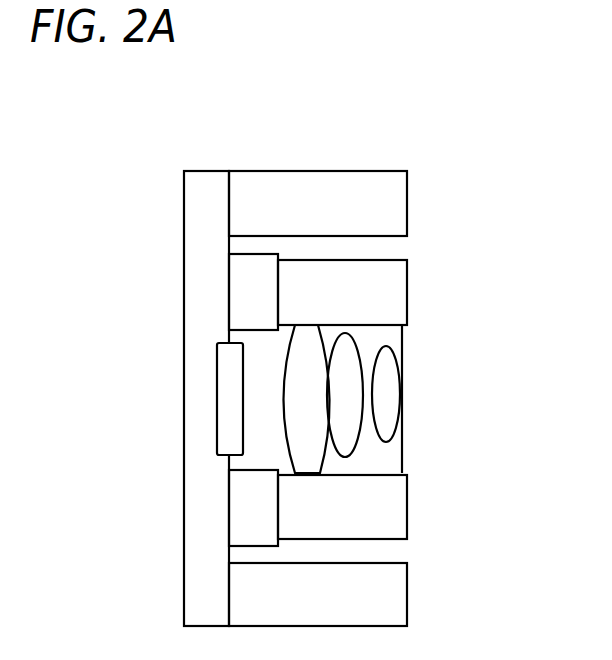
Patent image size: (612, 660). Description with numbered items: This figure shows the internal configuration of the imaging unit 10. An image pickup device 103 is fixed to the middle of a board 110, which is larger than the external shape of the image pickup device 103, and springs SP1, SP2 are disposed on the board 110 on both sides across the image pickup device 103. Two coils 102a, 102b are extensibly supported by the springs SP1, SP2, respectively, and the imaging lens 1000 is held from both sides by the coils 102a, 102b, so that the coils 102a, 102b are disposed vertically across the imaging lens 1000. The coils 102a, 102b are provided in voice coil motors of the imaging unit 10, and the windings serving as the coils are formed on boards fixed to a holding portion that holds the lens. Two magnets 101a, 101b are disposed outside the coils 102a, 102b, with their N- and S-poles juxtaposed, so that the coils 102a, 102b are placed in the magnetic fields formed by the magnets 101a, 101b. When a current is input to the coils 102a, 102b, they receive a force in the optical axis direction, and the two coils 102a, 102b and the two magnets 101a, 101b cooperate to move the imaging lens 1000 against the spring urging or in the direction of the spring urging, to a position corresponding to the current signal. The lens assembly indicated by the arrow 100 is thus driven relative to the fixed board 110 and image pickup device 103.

The imaging unit 10 is at (458, 124).
The board 110 is at (202, 227).
The magnet 101a is at (380, 207).
The lens unit 100 is at (477, 268).
The coil 102a is at (380, 303).
The spring SP1 is at (253, 293).
The image pickup device 103 is at (230, 385).
The imaging lens 1000 is at (313, 352).
The spring SP2 is at (253, 508).
The coil 102b is at (363, 513).
The magnet 101b is at (380, 598).